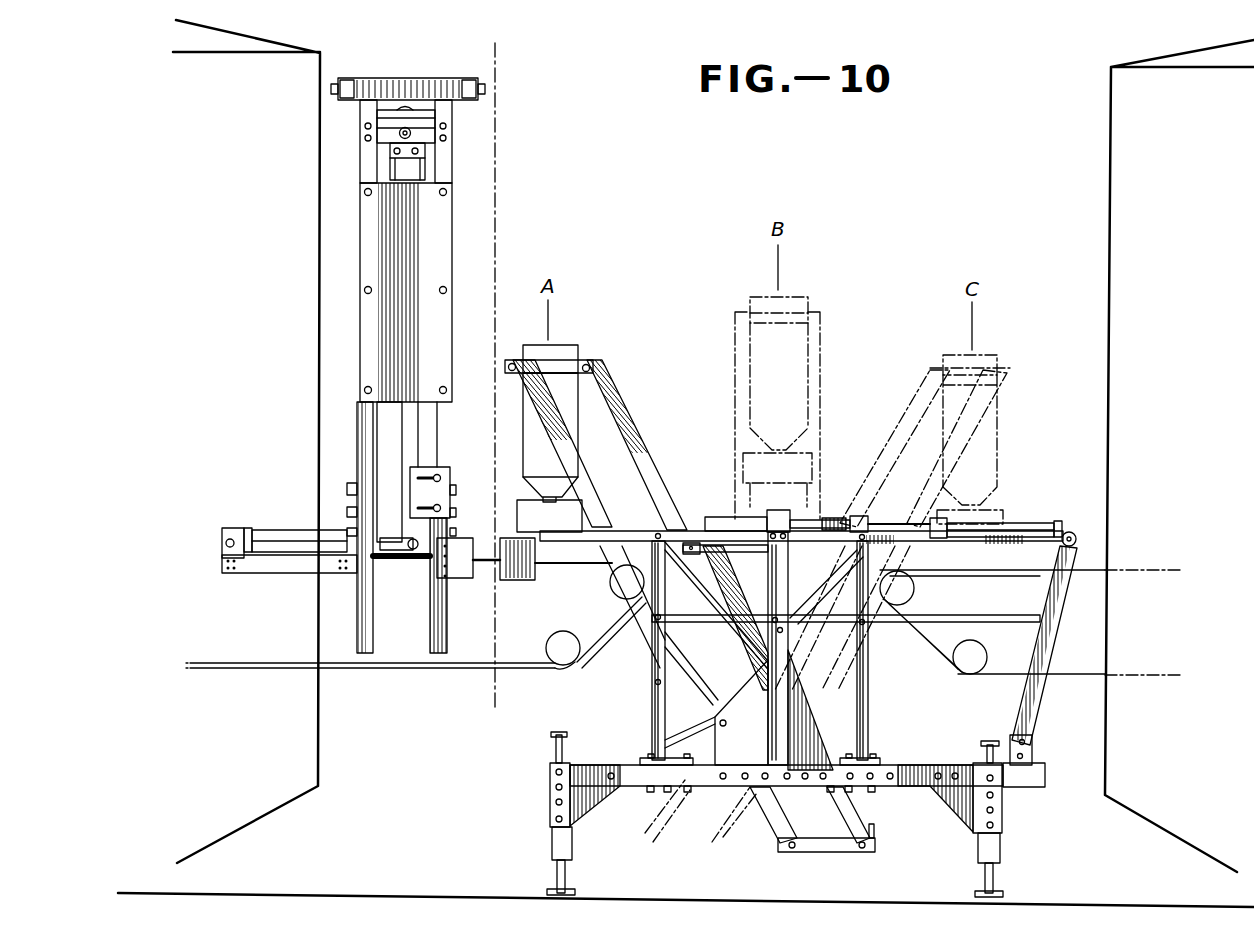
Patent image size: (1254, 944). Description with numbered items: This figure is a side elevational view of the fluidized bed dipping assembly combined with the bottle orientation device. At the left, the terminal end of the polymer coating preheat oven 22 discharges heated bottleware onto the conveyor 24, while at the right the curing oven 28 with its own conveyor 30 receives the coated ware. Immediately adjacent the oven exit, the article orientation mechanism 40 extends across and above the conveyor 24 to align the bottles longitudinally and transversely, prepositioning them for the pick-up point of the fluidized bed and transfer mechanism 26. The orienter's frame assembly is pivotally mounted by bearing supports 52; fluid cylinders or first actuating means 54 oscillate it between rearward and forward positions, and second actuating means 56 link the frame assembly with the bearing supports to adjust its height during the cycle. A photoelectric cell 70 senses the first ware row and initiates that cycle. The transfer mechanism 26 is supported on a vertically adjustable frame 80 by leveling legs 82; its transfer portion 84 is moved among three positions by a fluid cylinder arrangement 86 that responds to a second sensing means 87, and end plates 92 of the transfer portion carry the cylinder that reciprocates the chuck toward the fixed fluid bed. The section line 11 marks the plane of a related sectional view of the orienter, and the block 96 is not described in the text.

The section line 11- 11 is at (495, 709).
The polymer coating preheat oven 22 is at (218, 298).
The conveyor 24 is at (612, 574).
The fluidized bed and bottle transfer or dipping mechanism 26 is at (875, 312).
The curing oven 28 is at (1218, 310).
The conveyor 30 is at (993, 575).
The article orientation mechanism 40 is at (466, 241).
The bearing supports 52 is at (428, 135).
The fluid cylinders or first actuating means 54 is at (292, 542).
The fluid cylinders or second actuating means 56 is at (408, 182).
The photoelectric cell 70 is at (466, 575).
The vertically adjustable frame 80 is at (740, 753).
The leveling legs 82 is at (990, 880).
The transfer portion 84 is at (648, 408).
The fluid cylinder arrangement 86 is at (1025, 525).
The second sensing means 87 is at (530, 572).
The end plates 92 is at (570, 412).
The support block 96 is at (573, 518).